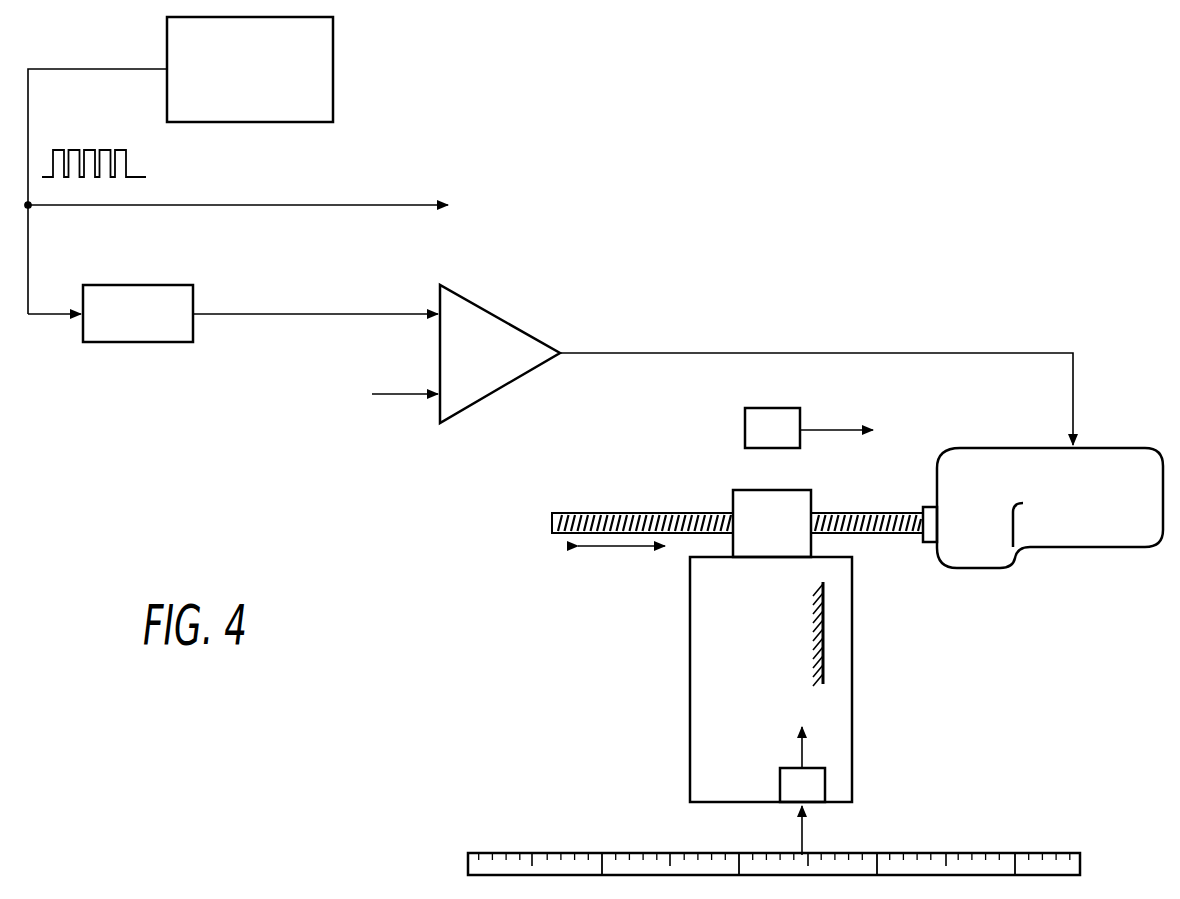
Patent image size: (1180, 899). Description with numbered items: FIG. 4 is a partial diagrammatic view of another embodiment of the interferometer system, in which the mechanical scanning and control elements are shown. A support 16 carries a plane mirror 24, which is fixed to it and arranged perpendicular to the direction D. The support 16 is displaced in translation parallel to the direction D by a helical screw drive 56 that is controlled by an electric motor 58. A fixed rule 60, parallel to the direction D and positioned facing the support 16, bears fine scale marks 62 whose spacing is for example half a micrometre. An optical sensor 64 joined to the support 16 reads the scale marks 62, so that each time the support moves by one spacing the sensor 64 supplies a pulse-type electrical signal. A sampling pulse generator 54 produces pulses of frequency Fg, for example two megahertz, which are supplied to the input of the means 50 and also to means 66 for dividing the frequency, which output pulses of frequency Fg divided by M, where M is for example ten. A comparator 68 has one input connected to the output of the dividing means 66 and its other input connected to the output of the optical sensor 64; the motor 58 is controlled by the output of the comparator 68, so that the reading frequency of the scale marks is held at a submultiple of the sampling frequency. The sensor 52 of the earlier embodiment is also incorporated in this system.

The support 16 is at (845, 734).
The plane mirror 24 is at (815, 629).
The means 50 is at (465, 299).
The sensor 52 is at (757, 410).
The sampling pulse generator 54 is at (325, 84).
The helical screw drive 56 is at (681, 512).
The electric motor 58 is at (1060, 538).
The fixed rule 60 is at (553, 805).
The scale marks 62 is at (634, 854).
The optical sensor 64 is at (880, 787).
The means for dividing the frequency 66 is at (125, 335).
The comparator 68 is at (501, 378).